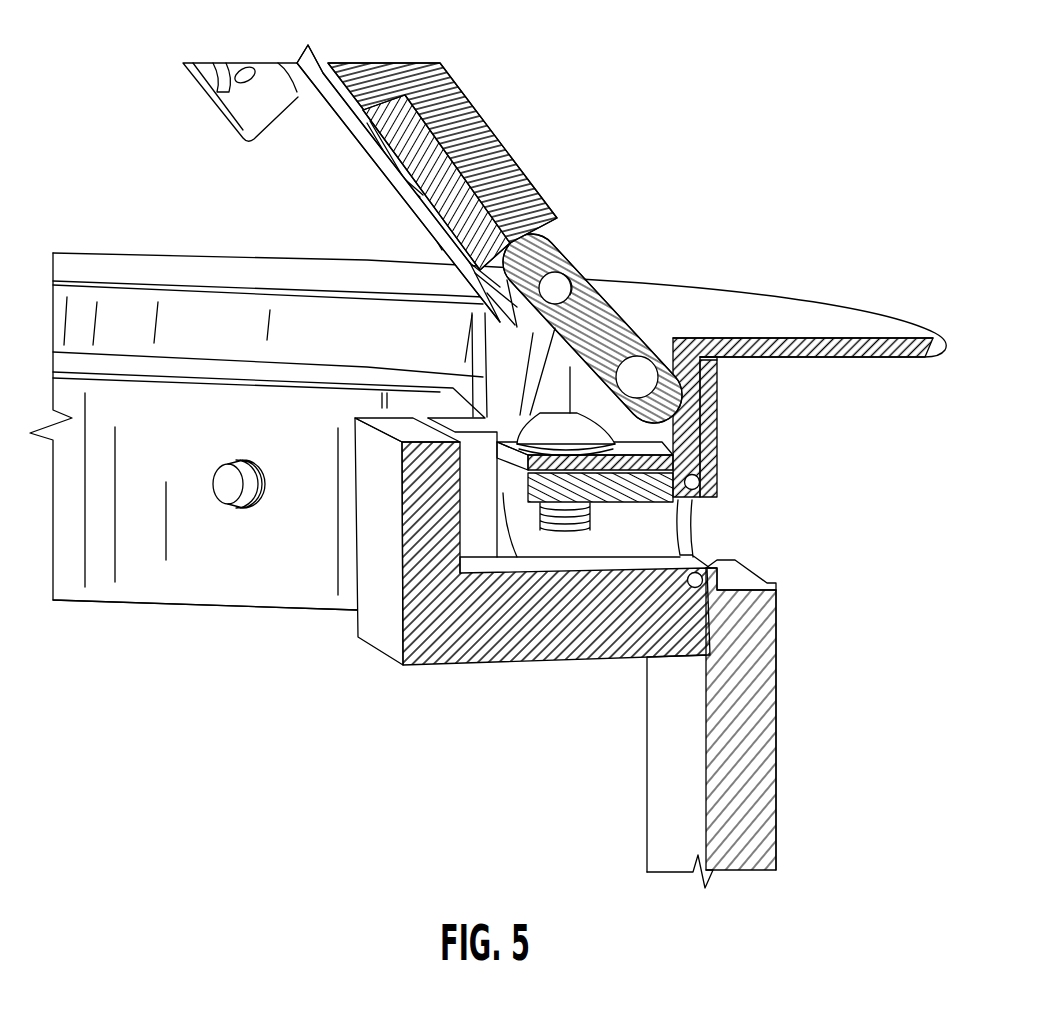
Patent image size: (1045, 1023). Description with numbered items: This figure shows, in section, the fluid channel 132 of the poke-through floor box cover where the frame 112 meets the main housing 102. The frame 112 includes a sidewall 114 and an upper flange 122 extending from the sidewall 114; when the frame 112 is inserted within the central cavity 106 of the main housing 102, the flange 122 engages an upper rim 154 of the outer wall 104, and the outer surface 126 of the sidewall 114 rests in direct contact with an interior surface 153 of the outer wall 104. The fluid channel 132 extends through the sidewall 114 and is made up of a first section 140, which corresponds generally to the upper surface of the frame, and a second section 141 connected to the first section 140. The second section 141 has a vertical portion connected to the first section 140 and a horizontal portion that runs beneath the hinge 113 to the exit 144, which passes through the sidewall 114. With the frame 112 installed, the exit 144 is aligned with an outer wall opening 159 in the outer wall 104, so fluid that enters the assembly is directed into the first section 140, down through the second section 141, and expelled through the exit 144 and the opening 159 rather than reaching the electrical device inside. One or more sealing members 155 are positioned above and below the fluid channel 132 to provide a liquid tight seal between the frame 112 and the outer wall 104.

The main housing 102 is at (748, 793).
The outer wall 104 is at (752, 698).
The central cavity 106 is at (273, 778).
The frame 112 is at (148, 245).
The hinge 113 is at (625, 338).
The sidewall 114 is at (388, 624).
The upper flange 122 is at (807, 313).
The outer surface 126 is at (708, 630).
The fluid channel 132 is at (480, 452).
The first section 140 is at (358, 360).
The second section 141 is at (487, 573).
The exit 144 is at (663, 522).
The interior surface 153 is at (708, 752).
The upper rim 154 is at (712, 365).
The sealing member 155 is at (705, 478).
The outer wall opening 159 is at (706, 560).